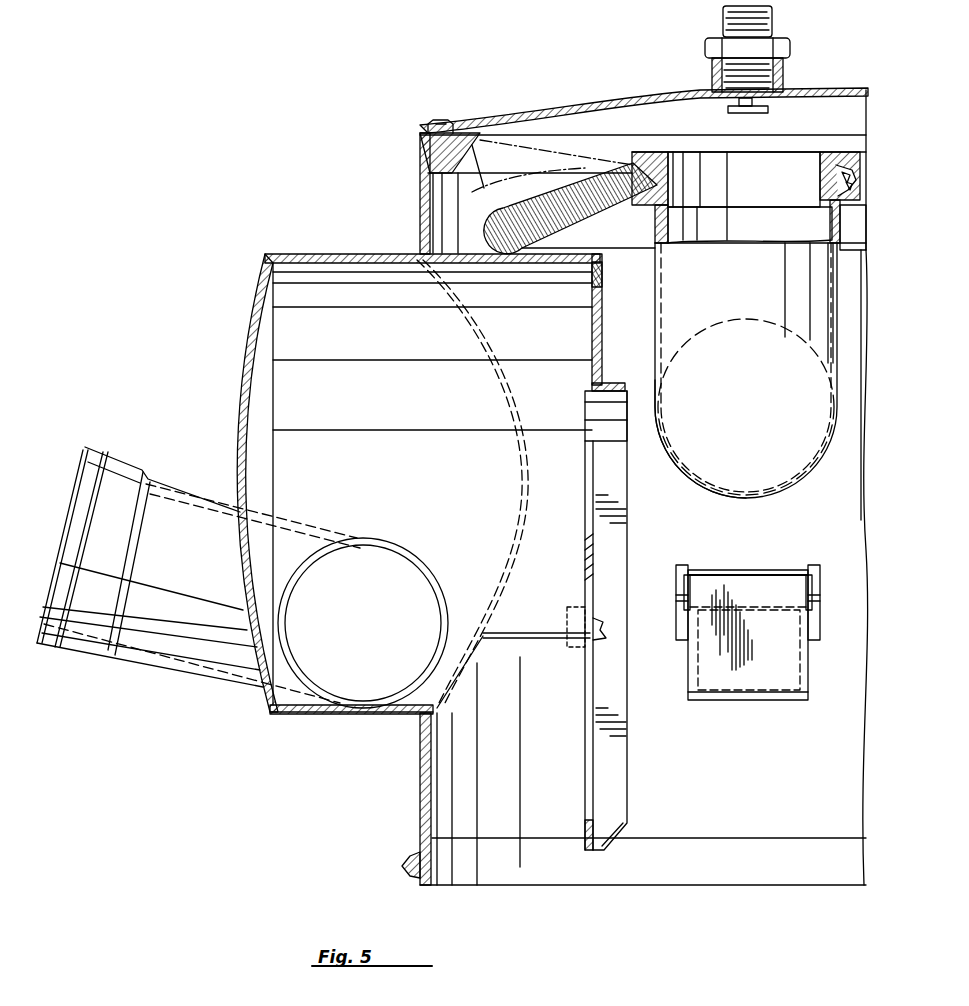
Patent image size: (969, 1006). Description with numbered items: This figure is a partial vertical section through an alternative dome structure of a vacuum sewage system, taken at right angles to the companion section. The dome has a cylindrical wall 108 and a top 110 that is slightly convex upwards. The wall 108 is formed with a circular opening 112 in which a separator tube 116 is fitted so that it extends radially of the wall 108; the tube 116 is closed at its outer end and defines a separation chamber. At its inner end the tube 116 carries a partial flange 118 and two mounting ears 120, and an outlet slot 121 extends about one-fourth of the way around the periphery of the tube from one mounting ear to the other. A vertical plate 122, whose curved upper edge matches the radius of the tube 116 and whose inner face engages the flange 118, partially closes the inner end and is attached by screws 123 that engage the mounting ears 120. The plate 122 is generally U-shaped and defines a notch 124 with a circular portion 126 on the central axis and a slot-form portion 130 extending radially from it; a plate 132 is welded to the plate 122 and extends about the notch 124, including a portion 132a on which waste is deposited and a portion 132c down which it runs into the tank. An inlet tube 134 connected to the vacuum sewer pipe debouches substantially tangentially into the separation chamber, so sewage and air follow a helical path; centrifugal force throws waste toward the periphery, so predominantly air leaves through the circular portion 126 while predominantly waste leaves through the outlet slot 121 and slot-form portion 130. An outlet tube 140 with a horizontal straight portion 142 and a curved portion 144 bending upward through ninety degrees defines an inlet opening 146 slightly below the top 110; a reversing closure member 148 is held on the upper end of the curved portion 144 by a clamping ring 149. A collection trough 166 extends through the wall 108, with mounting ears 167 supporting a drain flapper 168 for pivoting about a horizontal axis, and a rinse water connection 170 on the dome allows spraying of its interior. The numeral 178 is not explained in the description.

The cylindrical wall 108 is at (421, 792).
The top 110 is at (624, 100).
The circular opening 112 is at (428, 265).
The separator tube 116 is at (350, 255).
The partial flange 118 is at (603, 283).
The mounting ears 120 is at (574, 650).
The outlet slot 121 is at (509, 657).
The vertical plate 122 is at (588, 327).
The screws 123 is at (607, 636).
The notch 124 is at (588, 797).
The circular portion 126 is at (587, 450).
The slot-form portion 130 is at (585, 734).
The plate 132 is at (633, 771).
The portion of plate 132a is at (600, 382).
The portion of plate 132c is at (622, 806).
The inlet tube 134 is at (167, 650).
The outlet tube 140 is at (797, 497).
The straight portion 142 is at (684, 477).
The curved portion 144 is at (672, 313).
The inlet opening 146 is at (783, 160).
The reversing closure member 148 is at (560, 212).
The clamping ring 149 is at (664, 165).
The collection trough 166 is at (748, 608).
The mounting ears 167 is at (677, 568).
The drain flapper 168 is at (750, 692).
The rinse water connection 170 is at (727, 20).
The bottom wall 178 is at (272, 722).